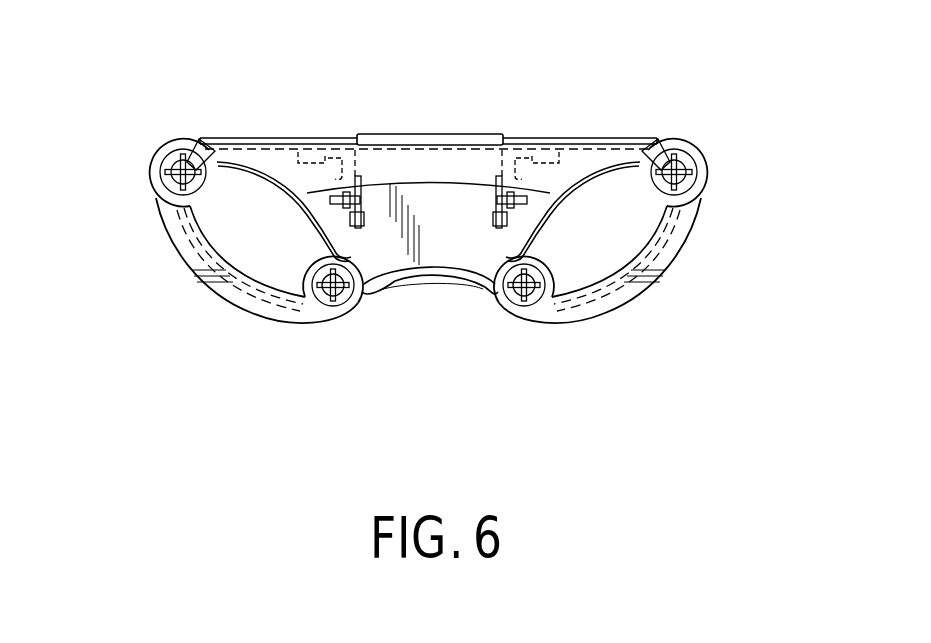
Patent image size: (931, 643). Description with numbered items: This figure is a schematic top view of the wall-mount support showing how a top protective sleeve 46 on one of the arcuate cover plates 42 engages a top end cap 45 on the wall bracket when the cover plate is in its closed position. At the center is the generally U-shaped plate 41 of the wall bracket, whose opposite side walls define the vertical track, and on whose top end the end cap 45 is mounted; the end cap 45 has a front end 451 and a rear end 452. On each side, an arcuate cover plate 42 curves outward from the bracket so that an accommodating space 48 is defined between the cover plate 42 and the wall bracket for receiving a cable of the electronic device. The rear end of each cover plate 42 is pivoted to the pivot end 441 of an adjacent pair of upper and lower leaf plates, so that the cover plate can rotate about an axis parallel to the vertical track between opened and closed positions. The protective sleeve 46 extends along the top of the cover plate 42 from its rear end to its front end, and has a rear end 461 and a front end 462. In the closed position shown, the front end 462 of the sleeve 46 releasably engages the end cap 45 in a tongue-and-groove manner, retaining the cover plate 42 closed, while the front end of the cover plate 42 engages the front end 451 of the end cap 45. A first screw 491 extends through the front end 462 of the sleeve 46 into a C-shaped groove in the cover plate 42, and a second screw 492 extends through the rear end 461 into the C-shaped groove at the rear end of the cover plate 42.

The U-shaped plate 41 is at (452, 134).
The arcuate cover plate 42 is at (217, 310).
The end cap 45 is at (430, 245).
The protective sleeve 46 is at (170, 243).
The accommodating space 48 is at (237, 200).
The pivot end 441 is at (692, 181).
The front end 451 is at (476, 292).
The rear end 452 is at (645, 144).
The rear end 461 is at (193, 140).
The front end 462 is at (348, 312).
The first screw 491 is at (325, 290).
The second screw 492 is at (188, 152).